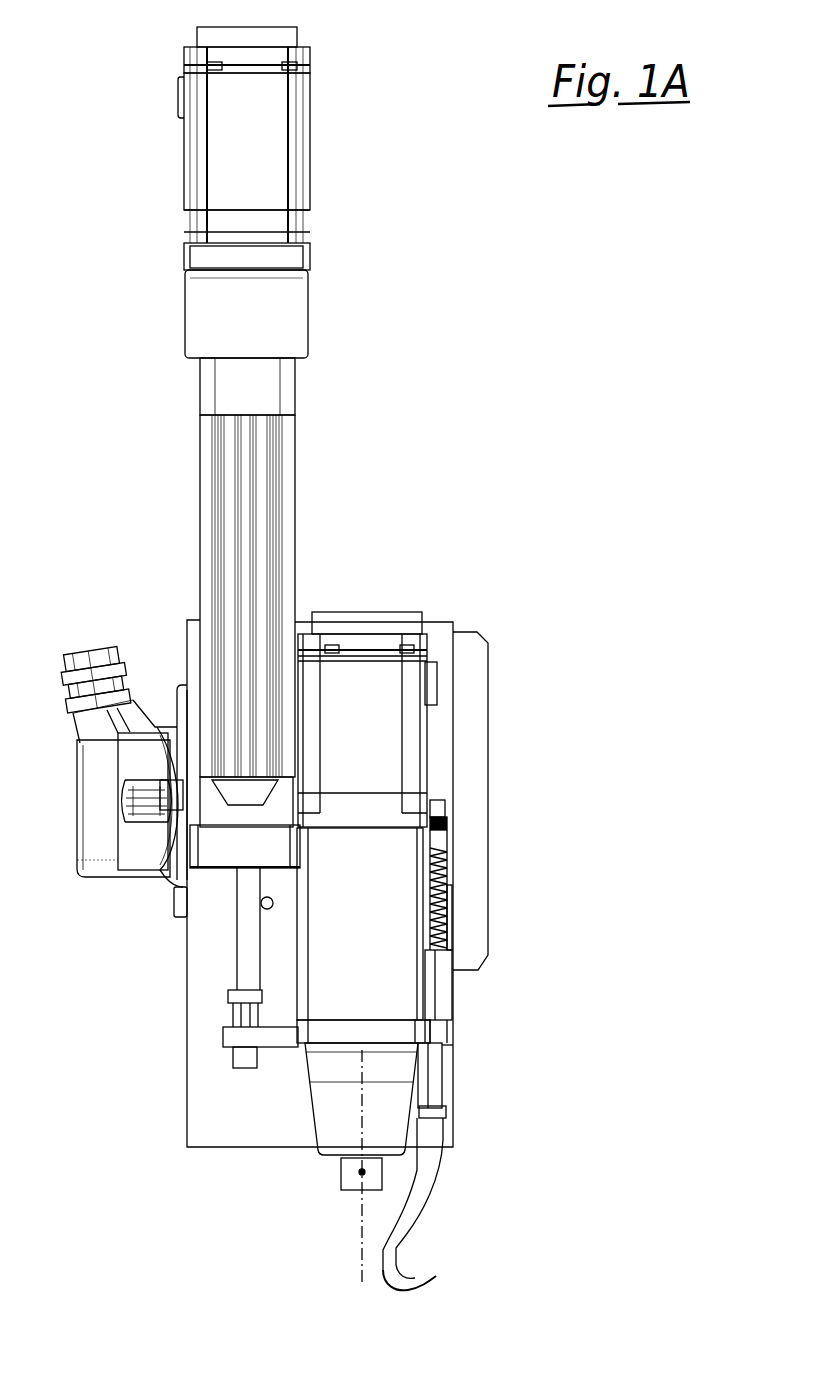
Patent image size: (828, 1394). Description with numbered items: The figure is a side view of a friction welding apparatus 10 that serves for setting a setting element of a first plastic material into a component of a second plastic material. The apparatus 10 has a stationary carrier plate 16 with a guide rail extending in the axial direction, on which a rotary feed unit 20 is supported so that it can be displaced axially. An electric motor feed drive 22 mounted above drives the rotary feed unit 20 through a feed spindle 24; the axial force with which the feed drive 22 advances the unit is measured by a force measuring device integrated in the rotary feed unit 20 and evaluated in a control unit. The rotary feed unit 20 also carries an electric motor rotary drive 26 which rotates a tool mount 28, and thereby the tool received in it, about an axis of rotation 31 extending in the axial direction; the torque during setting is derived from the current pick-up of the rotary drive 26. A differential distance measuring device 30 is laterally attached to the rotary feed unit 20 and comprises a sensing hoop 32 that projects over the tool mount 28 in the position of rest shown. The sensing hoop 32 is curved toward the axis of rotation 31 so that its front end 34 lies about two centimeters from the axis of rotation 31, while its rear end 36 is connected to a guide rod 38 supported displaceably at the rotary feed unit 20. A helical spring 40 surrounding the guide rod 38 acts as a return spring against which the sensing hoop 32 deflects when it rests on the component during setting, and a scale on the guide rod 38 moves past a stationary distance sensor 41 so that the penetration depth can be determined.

The friction welding apparatus 10 is at (432, 492).
The carrier plate 16 is at (185, 1107).
The rotary feed unit 20 is at (382, 948).
The feed drive 22 is at (308, 187).
The feed spindle 24 is at (233, 953).
The rotary drive 26 is at (375, 745).
The tool mount 28 is at (338, 1175).
The differential distance measuring device 30 is at (452, 1000).
The axis of rotation 31 is at (362, 1240).
The sensing hoop 32 is at (433, 1198).
The front end 34 is at (395, 1287).
The rear end 36 is at (437, 1113).
The guide rod 38 is at (435, 1078).
The helical spring 40 is at (447, 865).
The distance sensor 41 is at (455, 915).